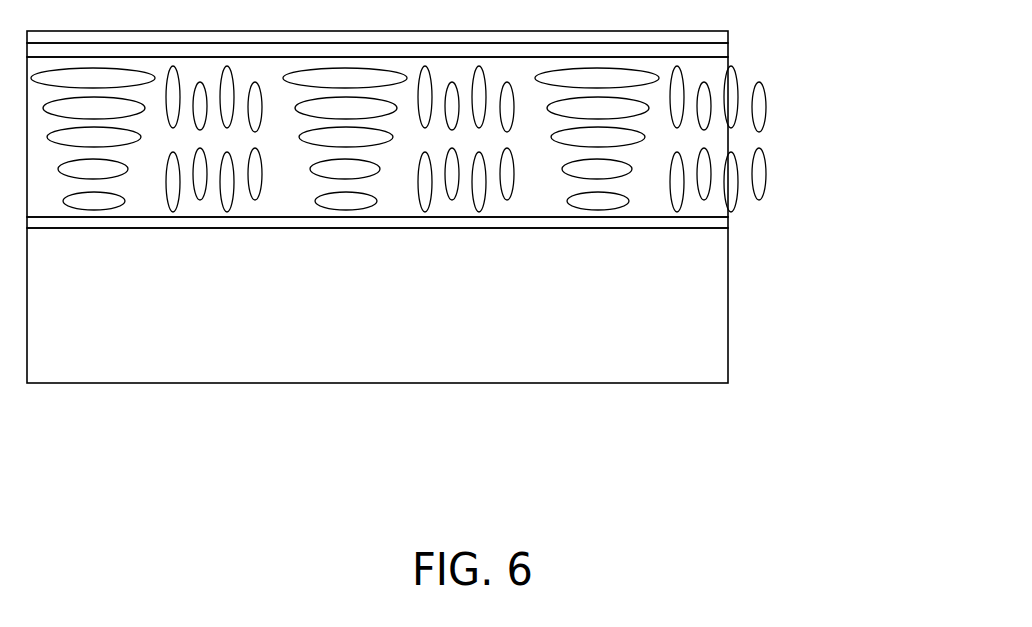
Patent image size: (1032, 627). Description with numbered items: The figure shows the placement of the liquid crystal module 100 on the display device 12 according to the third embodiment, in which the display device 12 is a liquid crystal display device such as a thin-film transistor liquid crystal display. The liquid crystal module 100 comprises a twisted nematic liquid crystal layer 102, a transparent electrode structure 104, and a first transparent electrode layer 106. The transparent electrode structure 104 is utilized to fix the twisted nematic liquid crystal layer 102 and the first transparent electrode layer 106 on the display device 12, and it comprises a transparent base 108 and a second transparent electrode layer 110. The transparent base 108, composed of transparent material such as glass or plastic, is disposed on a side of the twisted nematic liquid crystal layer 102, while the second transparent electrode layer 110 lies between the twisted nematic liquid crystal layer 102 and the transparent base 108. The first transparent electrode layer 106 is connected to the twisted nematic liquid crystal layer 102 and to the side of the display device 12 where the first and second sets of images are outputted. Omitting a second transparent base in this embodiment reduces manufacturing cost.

The liquid crystal module 100 is at (479, 128).
The transparent electrode structure 104 is at (442, 52).
The transparent base 108 is at (729, 39).
The second transparent electrode layer 110 is at (729, 51).
The twisted nematic liquid crystal layer 102 is at (729, 137).
The first transparent electrode layer 106 is at (438, 221).
The display device 12 is at (729, 305).